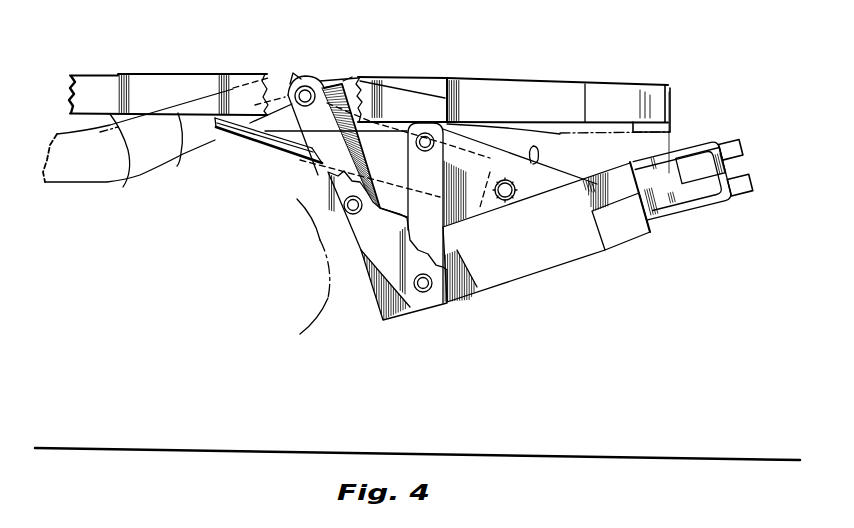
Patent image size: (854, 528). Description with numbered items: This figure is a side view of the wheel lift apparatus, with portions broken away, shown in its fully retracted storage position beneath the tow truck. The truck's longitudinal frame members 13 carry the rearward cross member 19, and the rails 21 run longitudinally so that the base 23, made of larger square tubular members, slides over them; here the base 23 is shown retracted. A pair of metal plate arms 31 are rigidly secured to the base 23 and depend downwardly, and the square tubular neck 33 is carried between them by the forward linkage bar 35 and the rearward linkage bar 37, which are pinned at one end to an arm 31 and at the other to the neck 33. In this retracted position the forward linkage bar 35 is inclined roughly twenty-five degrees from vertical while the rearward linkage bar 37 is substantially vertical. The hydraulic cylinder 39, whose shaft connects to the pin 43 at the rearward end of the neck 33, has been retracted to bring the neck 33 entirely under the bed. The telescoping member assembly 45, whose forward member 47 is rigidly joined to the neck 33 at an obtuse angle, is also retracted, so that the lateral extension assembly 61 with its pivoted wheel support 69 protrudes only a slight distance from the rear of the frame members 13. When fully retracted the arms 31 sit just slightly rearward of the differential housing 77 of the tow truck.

The frame members 13 is at (117, 186).
The cross member 19 is at (673, 96).
The rails 21 is at (123, 187).
The base 23 is at (177, 166).
The arms 31 is at (402, 303).
The neck 33 is at (536, 163).
The forward linkage bar 35 is at (322, 175).
The rearward linkage bar 37 is at (457, 250).
The hydraulic cylinder 39 is at (257, 137).
The pin 43 is at (531, 163).
The telescoping member assembly 45 is at (628, 249).
The forward member 47 is at (593, 254).
The lateral extension assembly 61 is at (712, 215).
The wheel support 69 is at (652, 221).
The differential housing 77 is at (322, 310).